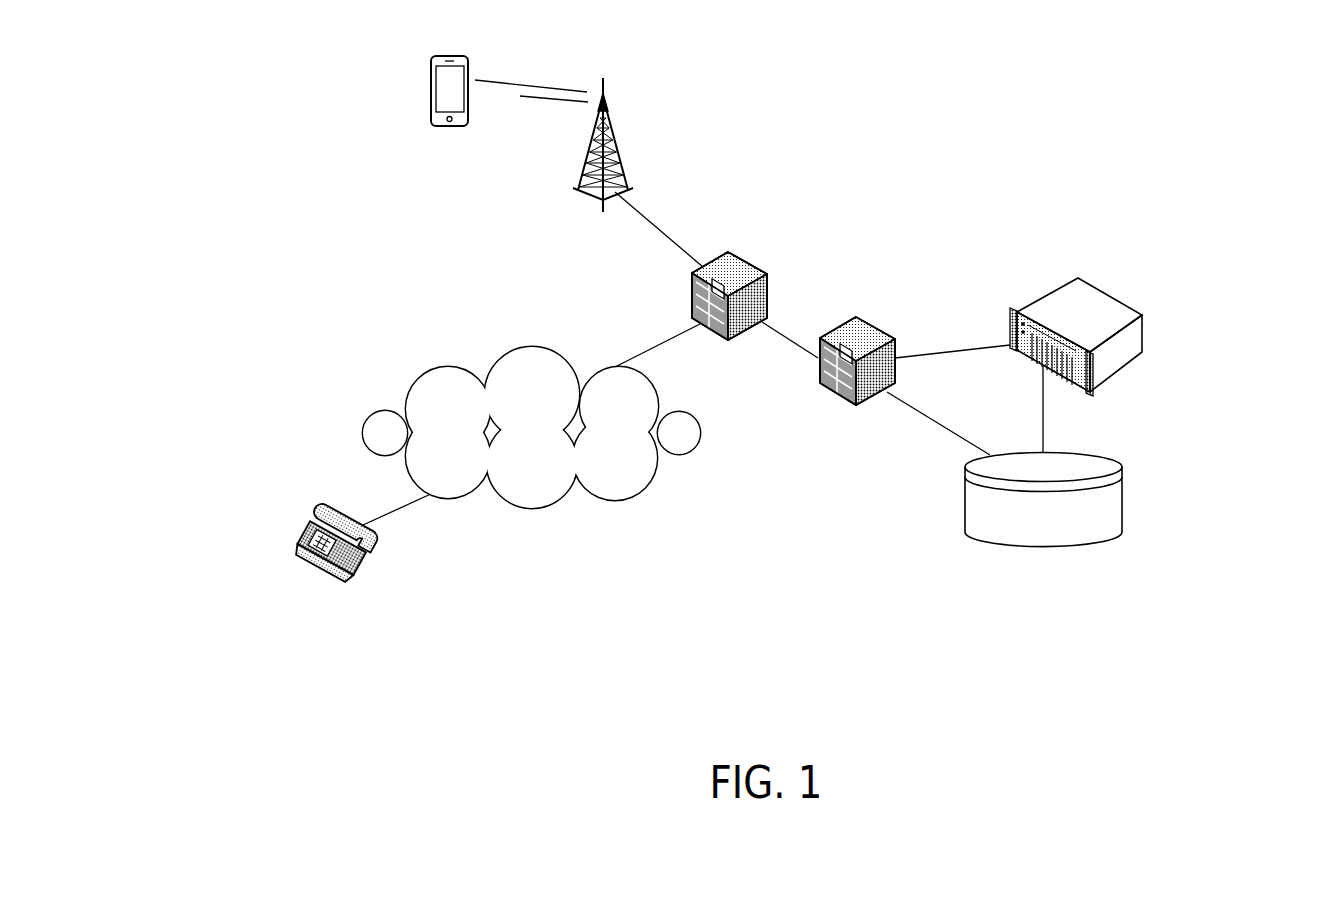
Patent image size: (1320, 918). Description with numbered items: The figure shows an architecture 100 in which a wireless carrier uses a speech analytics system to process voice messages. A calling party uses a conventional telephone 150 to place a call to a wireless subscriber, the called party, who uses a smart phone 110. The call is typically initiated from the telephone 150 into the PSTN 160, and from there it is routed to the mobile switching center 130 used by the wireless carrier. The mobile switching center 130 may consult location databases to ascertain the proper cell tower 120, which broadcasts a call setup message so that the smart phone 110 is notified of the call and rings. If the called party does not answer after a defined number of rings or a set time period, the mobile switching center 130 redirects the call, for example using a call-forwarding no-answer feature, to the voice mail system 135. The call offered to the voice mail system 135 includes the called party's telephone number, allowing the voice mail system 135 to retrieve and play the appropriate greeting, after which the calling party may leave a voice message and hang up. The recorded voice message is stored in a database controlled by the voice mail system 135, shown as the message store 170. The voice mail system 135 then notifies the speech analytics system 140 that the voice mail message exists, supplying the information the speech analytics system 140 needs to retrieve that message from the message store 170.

The architecture 100 is at (232, 169).
The smart phone 110 is at (437, 56).
The cell tower 120 is at (618, 142).
The mobile switching center 130 is at (750, 267).
The voice mail system 135 is at (897, 342).
The speech analytics system 140 is at (1123, 302).
The telephone 150 is at (308, 575).
The PSTN 160 is at (515, 481).
The message store 170 is at (1028, 538).